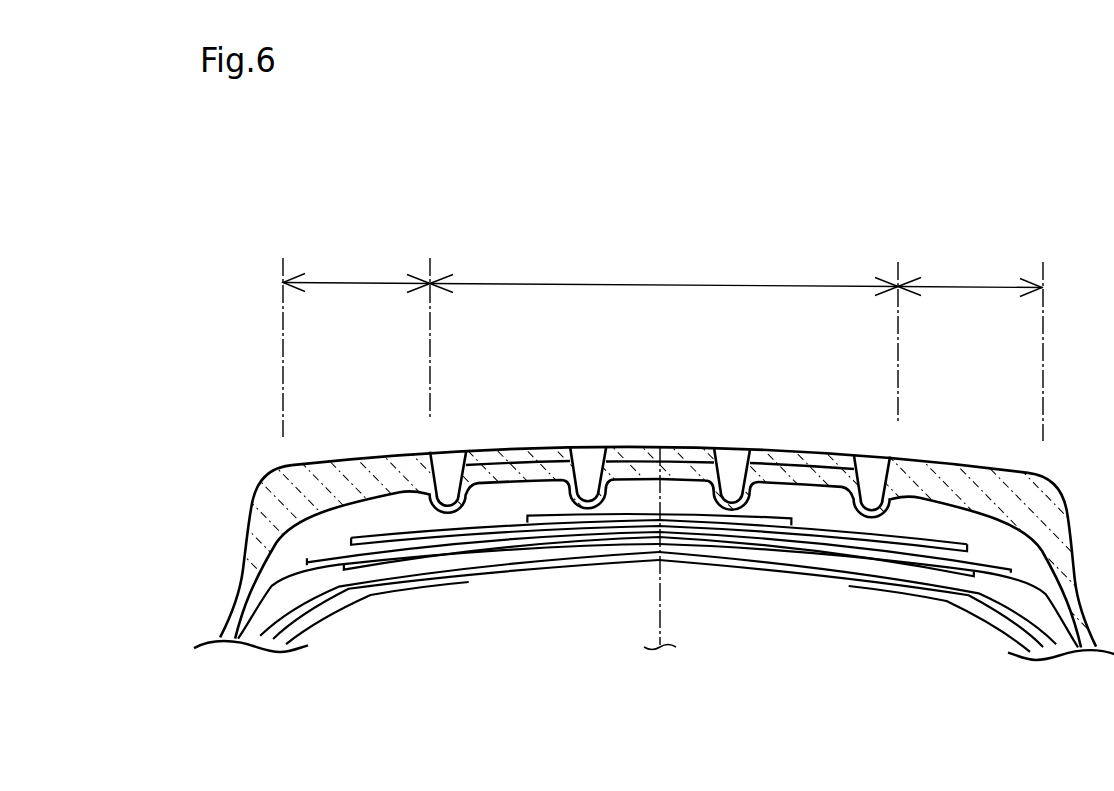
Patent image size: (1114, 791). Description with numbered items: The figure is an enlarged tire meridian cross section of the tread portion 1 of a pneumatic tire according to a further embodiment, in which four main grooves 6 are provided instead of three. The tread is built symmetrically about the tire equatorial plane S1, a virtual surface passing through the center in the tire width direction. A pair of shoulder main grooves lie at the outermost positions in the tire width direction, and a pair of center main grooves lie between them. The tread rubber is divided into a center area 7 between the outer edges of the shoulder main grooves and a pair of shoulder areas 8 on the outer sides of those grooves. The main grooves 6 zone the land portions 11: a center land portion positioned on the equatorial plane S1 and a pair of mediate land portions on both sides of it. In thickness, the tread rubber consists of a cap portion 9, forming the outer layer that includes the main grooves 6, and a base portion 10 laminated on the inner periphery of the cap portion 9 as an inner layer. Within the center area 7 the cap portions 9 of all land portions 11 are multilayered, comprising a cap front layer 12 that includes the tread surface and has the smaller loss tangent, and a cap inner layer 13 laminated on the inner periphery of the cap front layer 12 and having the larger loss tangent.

The tread portion 1 is at (1041, 240).
The main groove 6 is at (440, 468).
The center area 7 is at (660, 285).
The shoulder area 8 is at (350, 283).
The cap portion 9 is at (487, 358).
The base portion 10 is at (497, 556).
The land portion 11 is at (476, 436).
The cap front layer 12 is at (500, 448).
The cap inner layer 13 is at (530, 450).
The tire equatorial plane S1 is at (664, 596).